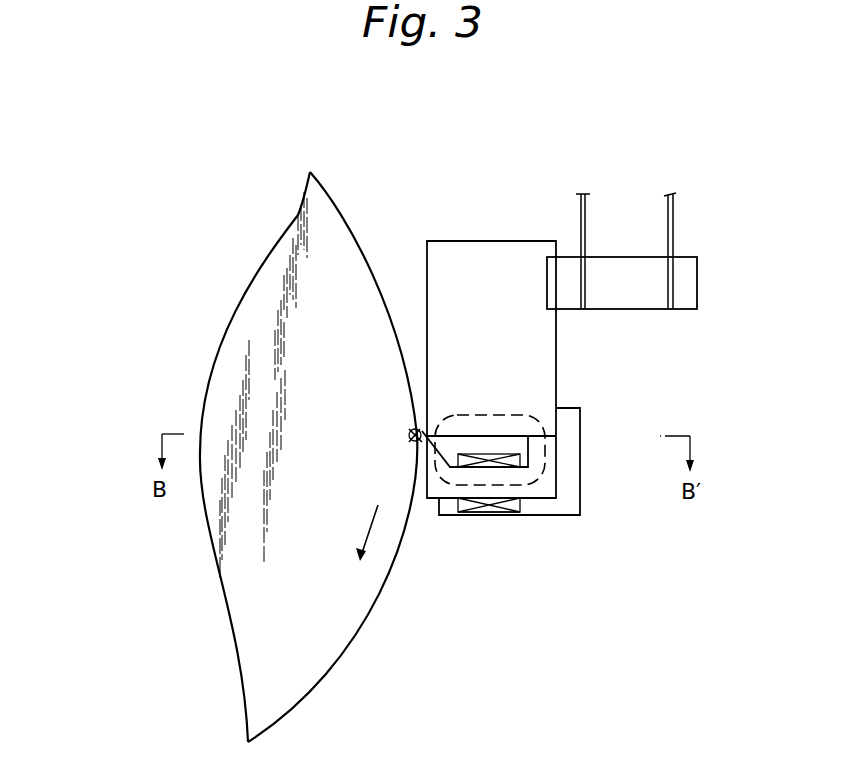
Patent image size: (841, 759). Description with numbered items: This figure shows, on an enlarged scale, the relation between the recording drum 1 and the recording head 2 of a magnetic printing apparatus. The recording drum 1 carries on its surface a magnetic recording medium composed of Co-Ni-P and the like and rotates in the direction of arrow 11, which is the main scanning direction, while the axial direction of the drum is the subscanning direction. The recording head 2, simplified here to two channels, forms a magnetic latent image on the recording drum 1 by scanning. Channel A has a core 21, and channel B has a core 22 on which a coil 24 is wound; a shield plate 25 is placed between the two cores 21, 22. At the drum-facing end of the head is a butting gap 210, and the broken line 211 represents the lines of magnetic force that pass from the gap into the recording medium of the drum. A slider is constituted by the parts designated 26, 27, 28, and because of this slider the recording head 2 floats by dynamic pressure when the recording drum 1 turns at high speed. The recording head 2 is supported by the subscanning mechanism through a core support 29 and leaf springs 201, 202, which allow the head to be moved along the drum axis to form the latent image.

The recording drum 1 is at (320, 680).
The arrow 11 is at (368, 530).
The recording head 2 is at (547, 402).
The slider 28 is at (556, 373).
The core support 29 is at (650, 305).
The leaf spring 201 is at (588, 224).
The leaf spring 202 is at (676, 226).
The shield plate 25 is at (569, 515).
The coil 24 is at (476, 515).
The core 22 is at (489, 505).
The core 21 is at (489, 505).
The slider 27 is at (489, 505).
The slider 26 is at (491, 555).
The lines of magnetic force 211 is at (472, 413).
The butting gap 210 is at (410, 428).